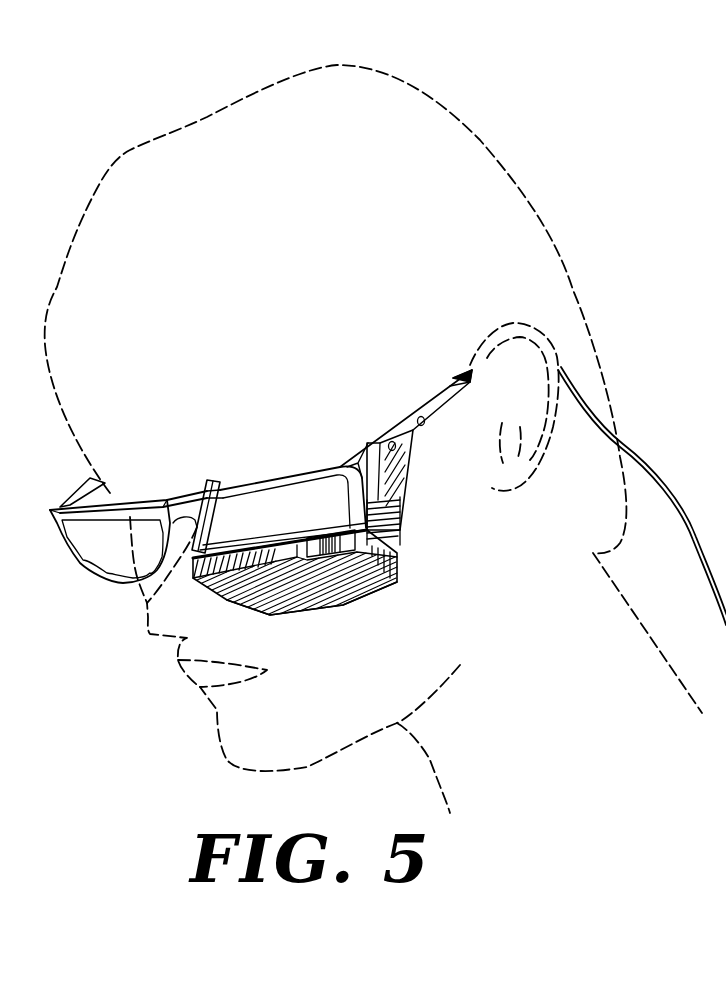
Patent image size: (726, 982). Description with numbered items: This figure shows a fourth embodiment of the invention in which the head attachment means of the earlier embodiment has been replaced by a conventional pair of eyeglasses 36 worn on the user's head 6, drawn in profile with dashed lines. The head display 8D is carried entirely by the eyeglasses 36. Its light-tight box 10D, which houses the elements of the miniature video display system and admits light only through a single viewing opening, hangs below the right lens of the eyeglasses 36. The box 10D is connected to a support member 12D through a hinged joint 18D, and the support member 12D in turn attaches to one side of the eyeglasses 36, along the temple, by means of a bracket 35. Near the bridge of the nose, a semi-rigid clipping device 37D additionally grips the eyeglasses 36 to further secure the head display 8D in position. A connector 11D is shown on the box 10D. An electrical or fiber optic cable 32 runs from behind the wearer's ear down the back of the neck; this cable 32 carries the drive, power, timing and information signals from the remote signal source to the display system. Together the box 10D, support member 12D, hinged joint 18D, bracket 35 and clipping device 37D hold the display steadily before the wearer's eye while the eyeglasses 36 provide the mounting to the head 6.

The user's head 6 is at (557, 225).
The head display 8D is at (370, 607).
The box 10D is at (313, 613).
The connector 11D is at (333, 537).
The support member 12D is at (400, 484).
The hinged joint 18D is at (400, 530).
The cable 32 is at (663, 486).
The bracket 35 is at (397, 432).
The eyeglasses 36 is at (456, 380).
The semi-rigid clipping device 37D is at (219, 483).